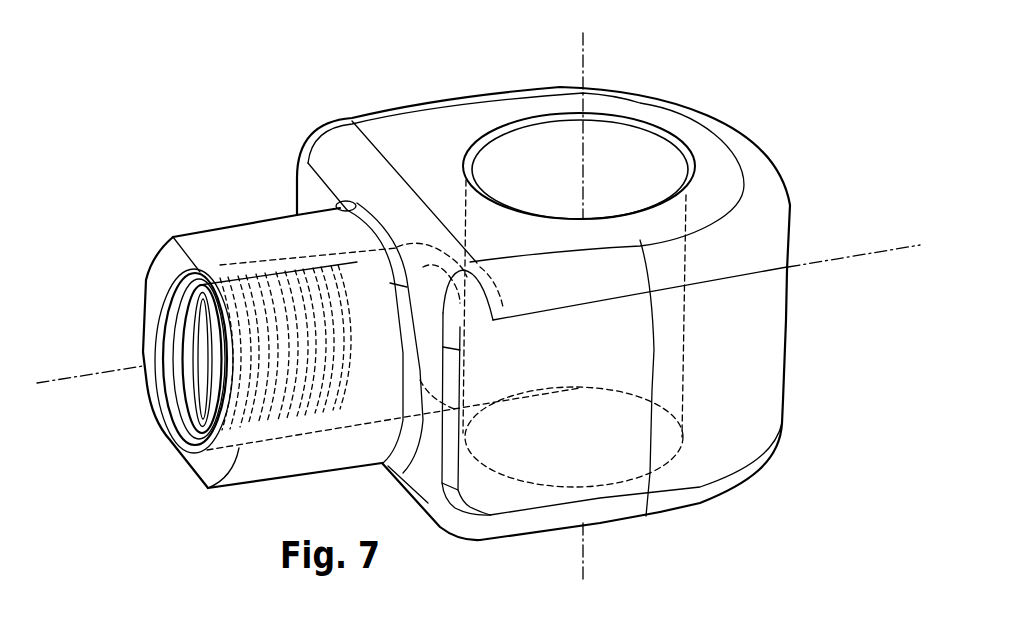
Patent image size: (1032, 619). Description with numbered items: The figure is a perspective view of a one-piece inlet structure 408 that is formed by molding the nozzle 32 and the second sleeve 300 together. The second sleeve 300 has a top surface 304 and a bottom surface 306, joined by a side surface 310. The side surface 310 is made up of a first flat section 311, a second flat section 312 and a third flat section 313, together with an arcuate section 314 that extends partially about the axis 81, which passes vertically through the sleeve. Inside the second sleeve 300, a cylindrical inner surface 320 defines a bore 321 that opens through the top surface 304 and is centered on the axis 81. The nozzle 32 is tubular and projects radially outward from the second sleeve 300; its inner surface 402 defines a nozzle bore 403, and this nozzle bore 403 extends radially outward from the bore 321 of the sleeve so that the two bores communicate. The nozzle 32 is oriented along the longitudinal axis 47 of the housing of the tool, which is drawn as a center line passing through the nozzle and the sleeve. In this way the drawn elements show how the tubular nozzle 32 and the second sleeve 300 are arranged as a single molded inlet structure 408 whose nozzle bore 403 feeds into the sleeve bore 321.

The inlet structure 408 is at (222, 143).
The second sleeve 300 is at (447, 88).
The first flat section 311 is at (385, 111).
The top surface 304 is at (665, 117).
The cylindrical inner surface 320 is at (668, 180).
The bore 321 is at (632, 118).
The side surface 310 is at (786, 330).
The arcuate section 314 is at (760, 398).
The bottom surface 306 is at (663, 516).
The second flat section 312 is at (425, 483).
The third flat section 313 is at (500, 497).
The nozzle 32 is at (247, 223).
The inner surface 402 is at (180, 297).
The nozzle bore 403 is at (160, 327).
The axis 81 is at (583, 40).
The longitudinal axis 47 is at (37, 383).